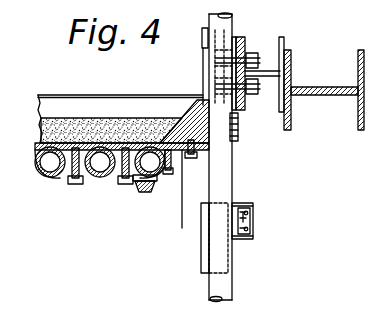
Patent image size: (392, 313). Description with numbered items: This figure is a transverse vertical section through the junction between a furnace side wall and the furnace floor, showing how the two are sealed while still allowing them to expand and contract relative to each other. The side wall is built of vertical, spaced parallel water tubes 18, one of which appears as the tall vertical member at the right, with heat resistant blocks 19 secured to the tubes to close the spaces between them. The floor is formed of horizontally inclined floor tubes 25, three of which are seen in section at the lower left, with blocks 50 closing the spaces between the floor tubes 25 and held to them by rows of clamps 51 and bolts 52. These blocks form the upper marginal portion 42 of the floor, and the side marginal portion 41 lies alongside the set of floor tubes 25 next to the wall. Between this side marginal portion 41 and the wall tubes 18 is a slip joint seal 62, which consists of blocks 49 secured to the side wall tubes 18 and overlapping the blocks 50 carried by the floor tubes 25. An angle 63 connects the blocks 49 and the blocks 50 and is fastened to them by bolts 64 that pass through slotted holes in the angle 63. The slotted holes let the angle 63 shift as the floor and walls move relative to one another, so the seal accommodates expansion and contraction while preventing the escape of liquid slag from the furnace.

The water tubes 18 is at (234, 18).
The heat resistant blocks 19 is at (201, 38).
The floor tubes 25 is at (36, 176).
The side marginal portion 41 is at (188, 110).
The upper marginal portion 42 is at (51, 117).
The blocks 49 is at (196, 125).
The blocks 50 is at (88, 140).
The clamps 51 is at (107, 170).
The bolts 52 is at (78, 184).
The slip joint seal 62 is at (177, 201).
The angle 63 is at (146, 178).
The bolts 64 is at (188, 150).